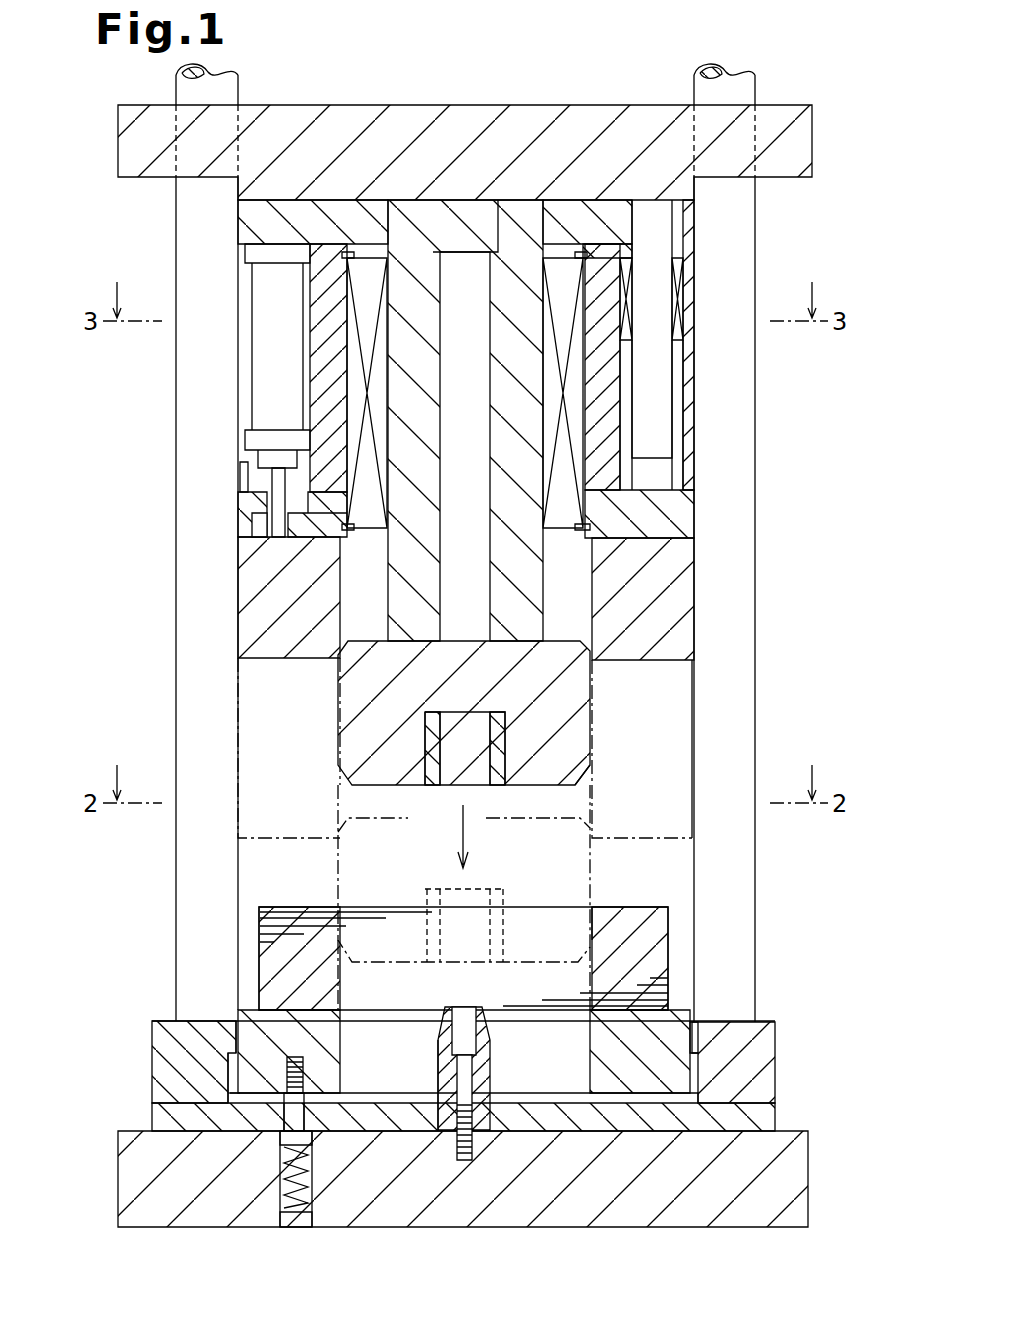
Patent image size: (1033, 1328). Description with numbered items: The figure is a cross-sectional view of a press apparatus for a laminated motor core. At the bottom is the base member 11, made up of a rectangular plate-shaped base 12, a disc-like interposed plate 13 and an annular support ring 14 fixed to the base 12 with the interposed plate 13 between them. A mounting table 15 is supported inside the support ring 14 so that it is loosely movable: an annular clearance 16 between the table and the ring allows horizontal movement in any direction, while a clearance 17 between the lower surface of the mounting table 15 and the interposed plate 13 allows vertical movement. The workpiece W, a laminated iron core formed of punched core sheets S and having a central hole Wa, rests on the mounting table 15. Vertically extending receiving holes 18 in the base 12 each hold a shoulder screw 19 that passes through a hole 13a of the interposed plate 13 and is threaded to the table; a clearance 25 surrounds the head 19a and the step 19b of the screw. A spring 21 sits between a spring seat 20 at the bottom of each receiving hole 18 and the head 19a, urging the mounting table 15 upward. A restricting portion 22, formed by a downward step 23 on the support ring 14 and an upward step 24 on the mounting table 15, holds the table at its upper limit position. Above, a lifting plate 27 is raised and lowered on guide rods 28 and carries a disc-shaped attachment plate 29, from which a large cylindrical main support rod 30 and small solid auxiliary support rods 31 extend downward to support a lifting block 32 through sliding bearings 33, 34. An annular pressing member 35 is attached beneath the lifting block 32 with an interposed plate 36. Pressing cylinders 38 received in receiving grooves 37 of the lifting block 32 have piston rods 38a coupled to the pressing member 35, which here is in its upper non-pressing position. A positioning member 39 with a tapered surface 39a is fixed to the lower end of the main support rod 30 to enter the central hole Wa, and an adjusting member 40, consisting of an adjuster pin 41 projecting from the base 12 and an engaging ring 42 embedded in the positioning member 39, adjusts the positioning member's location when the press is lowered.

The base member 11 is at (812, 1055).
The base 12 is at (787, 1137).
The interposed plate 13 is at (158, 1117).
The hole 13a is at (282, 1128).
The support ring 14 is at (757, 1062).
The mounting table 15 is at (240, 1010).
The clearance 16 is at (697, 1040).
The clearance 17 is at (640, 1100).
The receiving hole 18 is at (282, 1200).
The shoulder screw 19 is at (302, 1115).
The head 19a is at (303, 1137).
The step 19b is at (292, 1097).
The spring seat 20 is at (292, 1228).
The spring 21 is at (313, 1197).
The restricting portion 22 is at (104, 1033).
The downward step 23 is at (228, 1062).
The upward step 24 is at (233, 1048).
The clearance 25 is at (307, 1097).
The lifting plate 27 is at (780, 168).
The guide rod 28 is at (185, 252).
The attachment plate 29 is at (240, 232).
The main support rod 30 is at (527, 574).
The auxiliary support rod 31 is at (665, 393).
The lifting block 32 is at (690, 466).
The sliding bearing 33 is at (365, 517).
The sliding bearing 34 is at (680, 330).
The pressing member 35 is at (683, 592).
The interposed plate 36 is at (690, 525).
The receiving groove 37 is at (300, 473).
The pressing cylinder 38 is at (260, 334).
The piston rod 38a is at (273, 480).
The positioning member 39 is at (582, 722).
The tapered surface 39a is at (586, 775).
The adjusting member 40 is at (546, 1052).
The adjuster pin 41 is at (436, 1020).
The engaging ring 42 is at (430, 786).
The core sheet S is at (303, 912).
The workpiece W is at (645, 912).
The central hole Wa is at (590, 920).